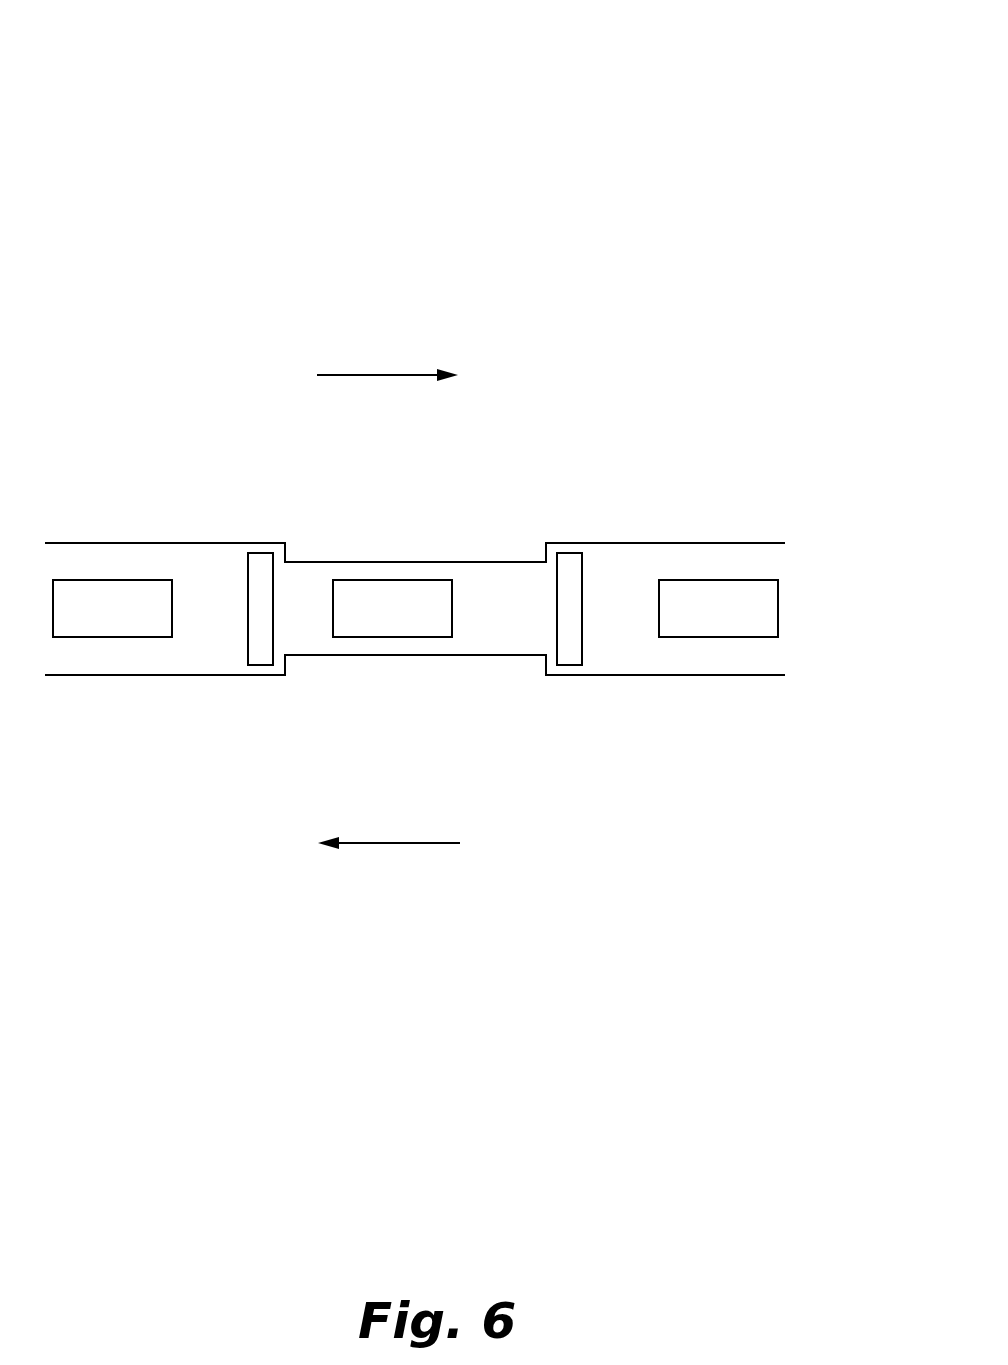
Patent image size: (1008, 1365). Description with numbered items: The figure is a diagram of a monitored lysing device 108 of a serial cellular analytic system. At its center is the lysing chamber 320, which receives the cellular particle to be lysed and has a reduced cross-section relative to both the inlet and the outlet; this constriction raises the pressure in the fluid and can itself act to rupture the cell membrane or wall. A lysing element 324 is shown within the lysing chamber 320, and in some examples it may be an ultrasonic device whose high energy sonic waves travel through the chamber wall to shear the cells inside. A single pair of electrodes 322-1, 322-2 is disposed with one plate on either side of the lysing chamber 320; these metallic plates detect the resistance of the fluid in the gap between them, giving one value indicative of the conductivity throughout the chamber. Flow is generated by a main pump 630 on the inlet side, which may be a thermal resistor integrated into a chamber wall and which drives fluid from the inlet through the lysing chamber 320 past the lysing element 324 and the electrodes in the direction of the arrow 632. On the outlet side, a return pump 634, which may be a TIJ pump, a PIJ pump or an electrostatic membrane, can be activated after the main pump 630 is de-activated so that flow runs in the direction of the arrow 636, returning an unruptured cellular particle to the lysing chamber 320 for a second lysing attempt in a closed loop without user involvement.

The lysing device 108 is at (190, 98).
The lysing chamber 320 is at (469, 636).
The electrode 322-1 is at (266, 652).
The electrode 322-2 is at (572, 566).
The lysing element 324 is at (378, 588).
The main pump 630 is at (96, 588).
The return pump 634 is at (687, 590).
The arrow 632 is at (352, 375).
The arrow 636 is at (418, 845).